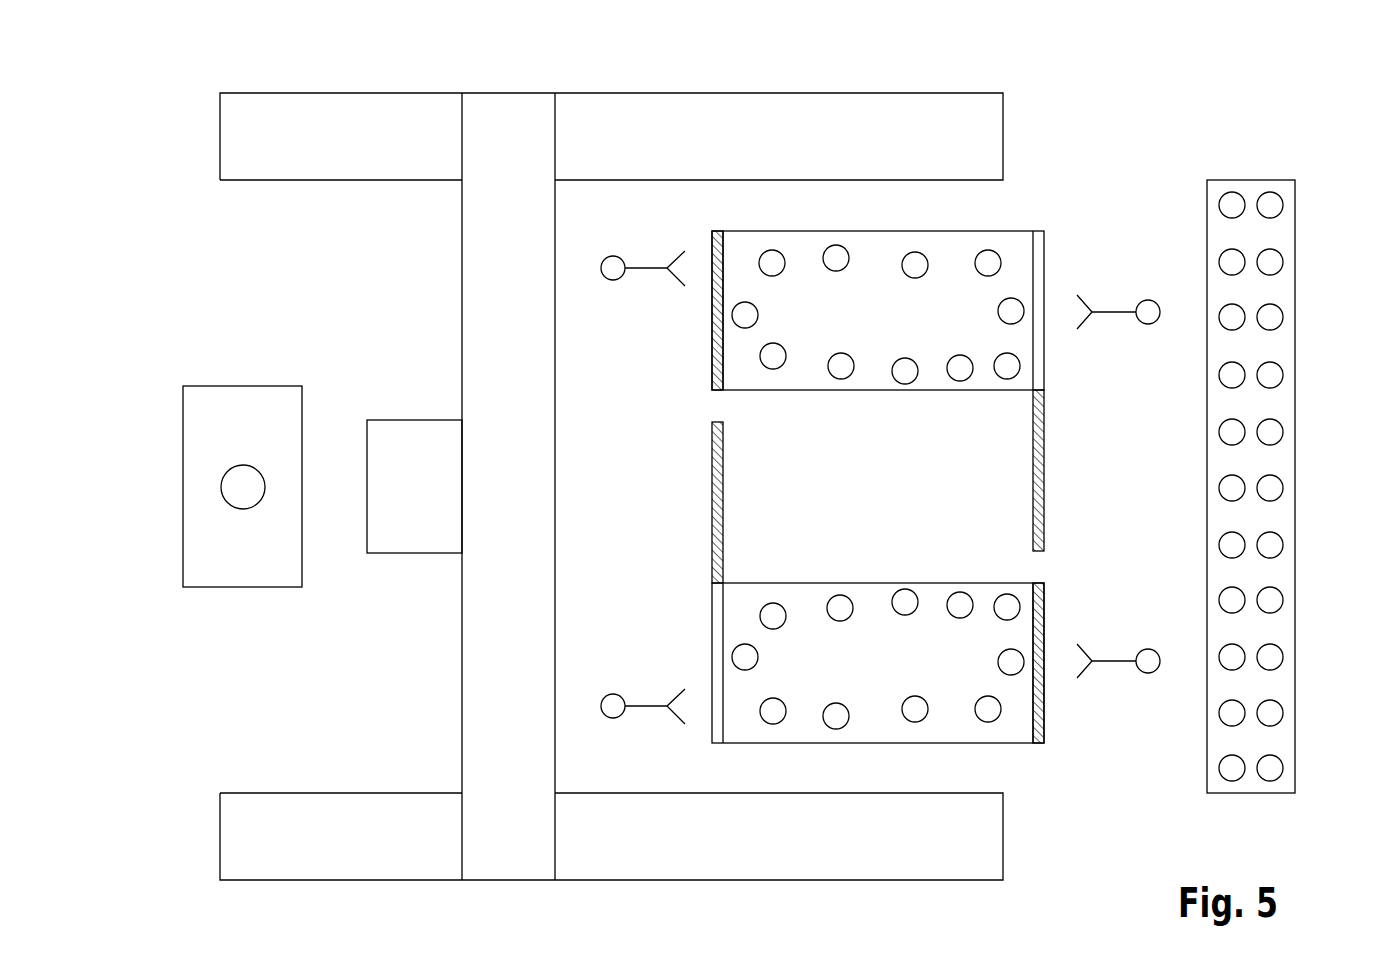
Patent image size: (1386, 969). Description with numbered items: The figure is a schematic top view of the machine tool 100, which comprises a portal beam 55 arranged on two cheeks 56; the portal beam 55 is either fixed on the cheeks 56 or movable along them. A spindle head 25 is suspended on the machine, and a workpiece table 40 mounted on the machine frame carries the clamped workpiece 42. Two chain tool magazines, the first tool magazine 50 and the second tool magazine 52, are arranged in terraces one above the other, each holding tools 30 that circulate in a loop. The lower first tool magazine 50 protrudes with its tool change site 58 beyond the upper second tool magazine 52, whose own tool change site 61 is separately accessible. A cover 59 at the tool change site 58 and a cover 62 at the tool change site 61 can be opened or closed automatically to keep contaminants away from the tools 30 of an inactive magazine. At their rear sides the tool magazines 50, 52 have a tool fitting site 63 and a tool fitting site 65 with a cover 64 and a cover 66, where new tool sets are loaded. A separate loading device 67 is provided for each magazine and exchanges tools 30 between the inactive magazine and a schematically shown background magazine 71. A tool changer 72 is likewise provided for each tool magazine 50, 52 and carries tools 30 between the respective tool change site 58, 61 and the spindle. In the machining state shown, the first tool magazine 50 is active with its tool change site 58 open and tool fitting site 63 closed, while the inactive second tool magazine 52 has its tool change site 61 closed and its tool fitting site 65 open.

The machine tool 100 is at (173, 220).
The cheeks 56 is at (371, 105).
The portal beam 55 is at (465, 663).
The spindle head 25 is at (407, 430).
The workpiece table 40 is at (252, 395).
The workpiece 42 is at (240, 487).
The second tool magazine 52 is at (1010, 230).
The cover 62 is at (712, 324).
The tool 30 is at (905, 372).
The tool change site 61 is at (690, 366).
The cover 59 is at (712, 494).
The cover 66 is at (1044, 464).
The tool fitting site 65 is at (1065, 245).
The loading device 67 is at (1112, 305).
The tool changer 72 is at (650, 256).
The first tool magazine 50 is at (988, 580).
The cover 64 is at (1044, 604).
The tool fitting site 63 is at (1065, 590).
The tool change site 58 is at (688, 650).
The background magazine 71 is at (1251, 190).